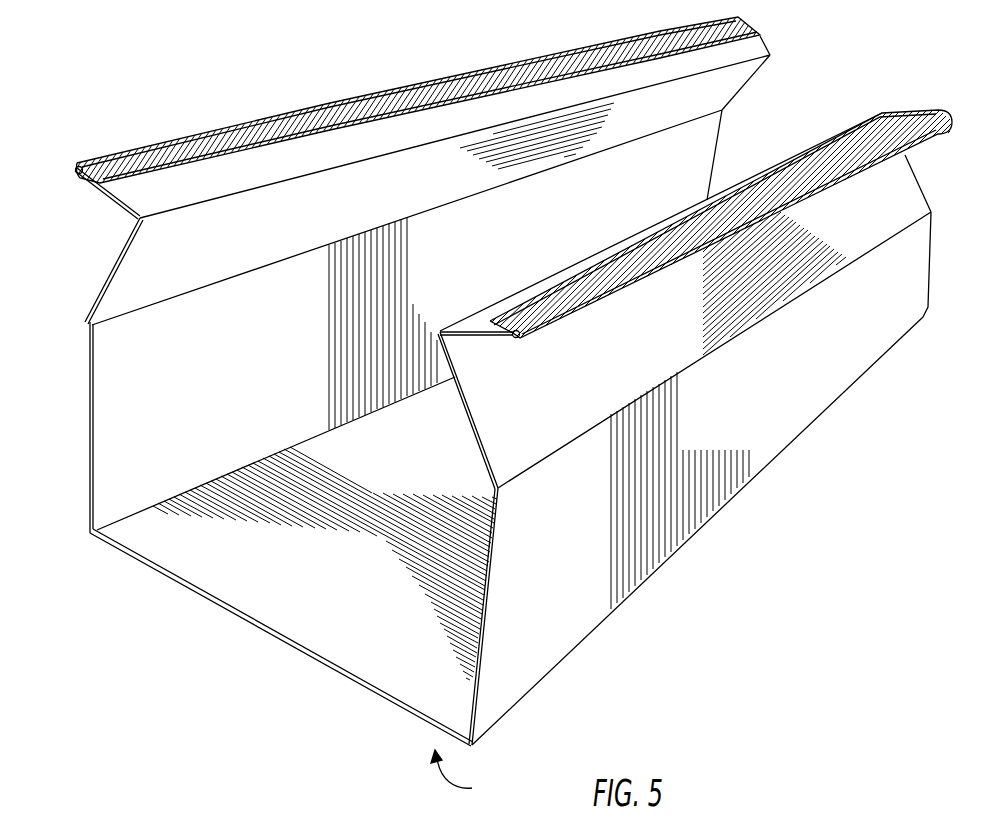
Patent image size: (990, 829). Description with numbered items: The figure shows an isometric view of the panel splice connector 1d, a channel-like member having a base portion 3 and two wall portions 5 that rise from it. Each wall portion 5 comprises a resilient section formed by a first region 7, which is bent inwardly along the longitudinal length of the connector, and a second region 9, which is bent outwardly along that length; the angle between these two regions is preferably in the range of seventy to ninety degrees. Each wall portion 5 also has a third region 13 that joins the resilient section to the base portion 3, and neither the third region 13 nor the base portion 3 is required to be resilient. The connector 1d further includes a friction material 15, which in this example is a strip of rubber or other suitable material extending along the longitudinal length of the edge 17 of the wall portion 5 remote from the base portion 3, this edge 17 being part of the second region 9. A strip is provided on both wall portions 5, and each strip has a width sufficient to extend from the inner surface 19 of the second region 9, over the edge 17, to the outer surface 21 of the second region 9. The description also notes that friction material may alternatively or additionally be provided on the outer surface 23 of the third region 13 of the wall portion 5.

The base portion 3 is at (483, 381).
The wall portion 5 is at (565, 615).
The first region 7 is at (143, 262).
The second region 9 is at (213, 173).
The third region 13 is at (478, 427).
The friction material 15 is at (483, 196).
The edge 17 is at (73, 170).
The inner surface 19 is at (748, 53).
The outer surface 21 is at (113, 208).
The outer surface 23 is at (900, 315).
The panel splice connector 1d is at (463, 776).